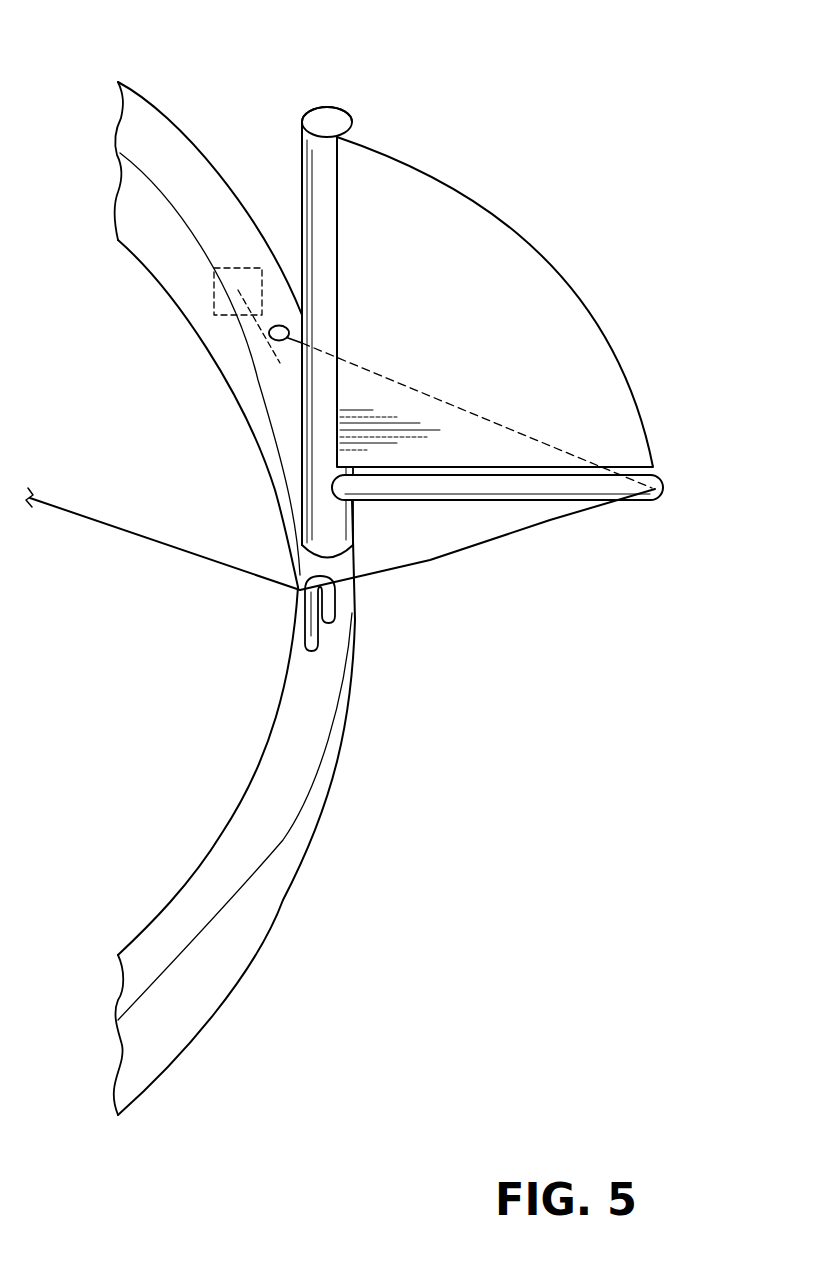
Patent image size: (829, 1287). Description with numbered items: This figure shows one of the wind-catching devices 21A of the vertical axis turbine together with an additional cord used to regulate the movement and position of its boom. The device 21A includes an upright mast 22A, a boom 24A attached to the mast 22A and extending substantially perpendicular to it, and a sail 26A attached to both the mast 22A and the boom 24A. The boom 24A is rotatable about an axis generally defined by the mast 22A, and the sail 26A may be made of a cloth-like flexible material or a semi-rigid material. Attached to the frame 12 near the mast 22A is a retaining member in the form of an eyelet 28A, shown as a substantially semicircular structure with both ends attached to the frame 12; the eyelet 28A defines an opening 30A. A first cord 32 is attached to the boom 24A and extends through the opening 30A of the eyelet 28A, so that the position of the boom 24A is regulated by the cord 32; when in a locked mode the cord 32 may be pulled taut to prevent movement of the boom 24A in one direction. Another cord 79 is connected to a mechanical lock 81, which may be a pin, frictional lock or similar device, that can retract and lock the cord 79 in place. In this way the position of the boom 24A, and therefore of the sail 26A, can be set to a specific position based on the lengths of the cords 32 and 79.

The frame 12 is at (312, 809).
The device 21A is at (323, 98).
The mast 22A is at (308, 175).
The boom 24A is at (665, 490).
The sail 26A is at (553, 323).
The eyelet 28A is at (333, 610).
The opening 30A is at (322, 627).
The first cord 32 is at (162, 542).
The cord 79 is at (292, 345).
The mechanical lock 81 is at (213, 290).